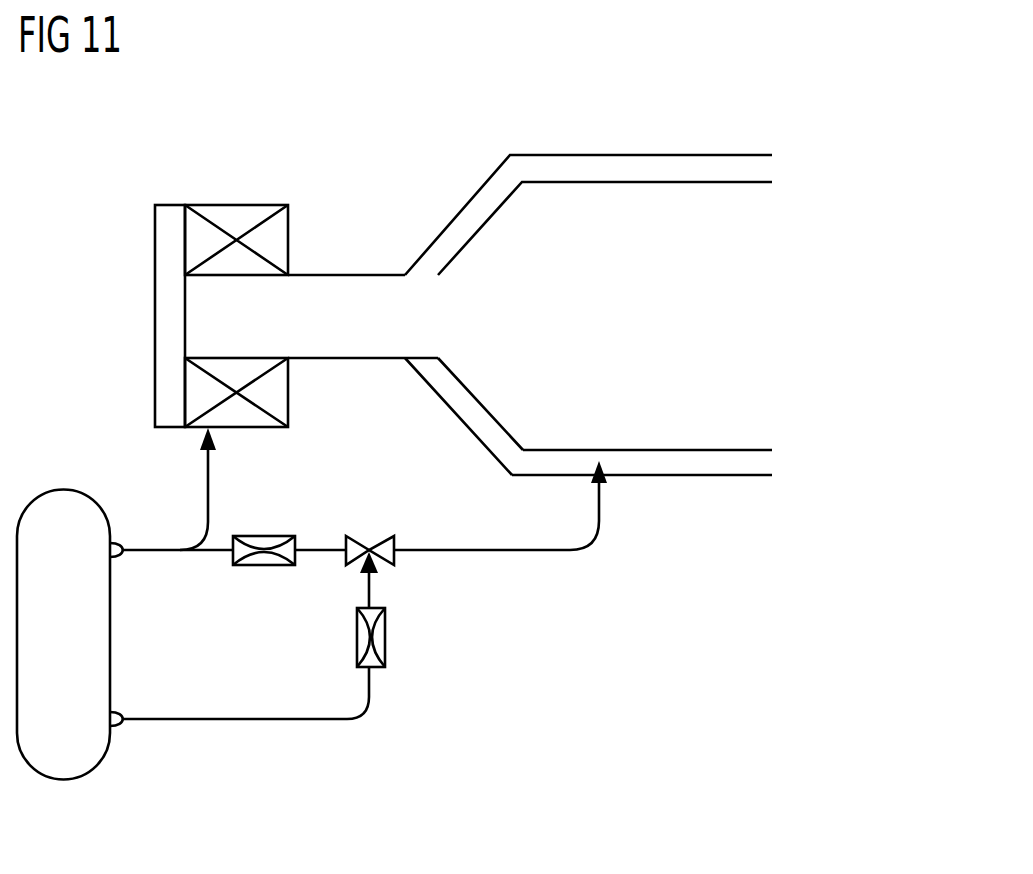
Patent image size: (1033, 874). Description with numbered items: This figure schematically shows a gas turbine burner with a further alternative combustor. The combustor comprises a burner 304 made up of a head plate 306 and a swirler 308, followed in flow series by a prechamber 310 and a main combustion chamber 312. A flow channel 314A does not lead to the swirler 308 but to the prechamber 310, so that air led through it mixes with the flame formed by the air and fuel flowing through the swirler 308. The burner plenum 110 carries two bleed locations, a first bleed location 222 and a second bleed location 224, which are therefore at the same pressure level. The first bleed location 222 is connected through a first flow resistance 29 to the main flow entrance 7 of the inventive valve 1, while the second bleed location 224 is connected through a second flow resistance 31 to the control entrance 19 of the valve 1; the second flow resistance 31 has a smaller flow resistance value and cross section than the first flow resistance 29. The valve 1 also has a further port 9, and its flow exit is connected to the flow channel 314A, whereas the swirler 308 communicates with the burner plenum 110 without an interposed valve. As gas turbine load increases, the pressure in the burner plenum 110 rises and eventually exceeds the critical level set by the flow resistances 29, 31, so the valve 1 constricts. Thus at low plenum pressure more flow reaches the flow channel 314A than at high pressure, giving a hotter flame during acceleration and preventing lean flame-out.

The valve 1 is at (377, 542).
The main flow entrance 7 is at (340, 553).
The second valve port 9 is at (397, 552).
The control entrance 19 is at (380, 565).
The first flow resistance 29 is at (264, 567).
The second flow resistance 31 is at (386, 637).
The burner plenum 110 is at (110, 637).
The first bleed location 222 is at (110, 551).
The second bleed location 224 is at (110, 720).
The burner 304 is at (185, 299).
The head plate 306 is at (162, 317).
The swirler 308 is at (237, 215).
The prechamber 310 is at (355, 348).
The main combustion chamber 312 is at (708, 435).
The flow channel 314A is at (472, 213).